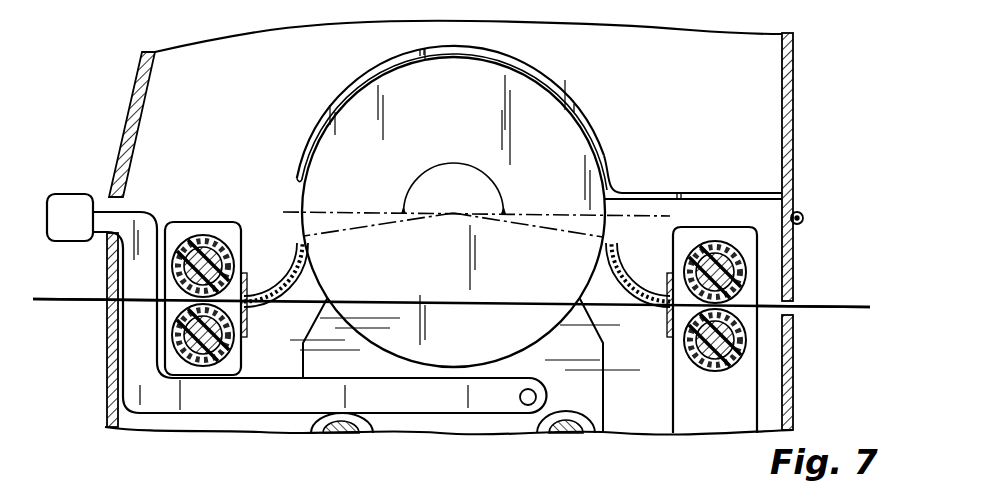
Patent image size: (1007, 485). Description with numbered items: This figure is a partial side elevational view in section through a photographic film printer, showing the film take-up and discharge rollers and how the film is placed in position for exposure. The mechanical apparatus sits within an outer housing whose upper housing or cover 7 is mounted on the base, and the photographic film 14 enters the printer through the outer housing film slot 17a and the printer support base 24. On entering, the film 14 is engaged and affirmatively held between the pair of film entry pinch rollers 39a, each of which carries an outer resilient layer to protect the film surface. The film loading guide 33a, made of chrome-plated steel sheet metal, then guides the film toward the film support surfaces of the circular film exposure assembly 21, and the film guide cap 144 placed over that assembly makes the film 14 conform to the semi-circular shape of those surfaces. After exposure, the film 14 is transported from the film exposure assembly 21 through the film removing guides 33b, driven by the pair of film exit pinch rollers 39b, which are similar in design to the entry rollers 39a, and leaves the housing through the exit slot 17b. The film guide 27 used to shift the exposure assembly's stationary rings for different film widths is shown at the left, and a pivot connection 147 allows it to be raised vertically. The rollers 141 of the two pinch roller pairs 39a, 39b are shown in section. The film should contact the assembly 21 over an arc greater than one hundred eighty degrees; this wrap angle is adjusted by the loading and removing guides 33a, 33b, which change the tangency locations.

The upper housing or cover 7 is at (137, 91).
The film guide 27 is at (70, 196).
The film exposure assembly 21 is at (336, 91).
The film guide cap 144 is at (566, 91).
The film entry pinch rollers 39a is at (192, 234).
The film exit pinch rollers 39b is at (750, 352).
The roller 141 is at (230, 255).
The film loading guide 33a is at (277, 302).
The film removing guides 33b is at (633, 310).
The photographic film 14 is at (62, 302).
The outer housing film slot 17a is at (107, 298).
The wire outlet portion 17b is at (793, 304).
The printer support base 24 is at (107, 390).
The pivot connection 147 is at (526, 405).